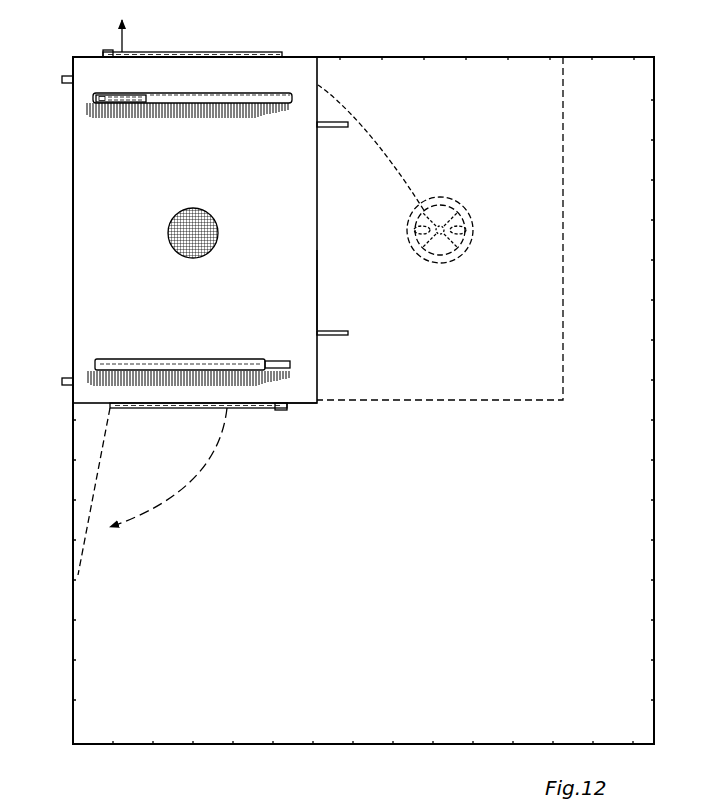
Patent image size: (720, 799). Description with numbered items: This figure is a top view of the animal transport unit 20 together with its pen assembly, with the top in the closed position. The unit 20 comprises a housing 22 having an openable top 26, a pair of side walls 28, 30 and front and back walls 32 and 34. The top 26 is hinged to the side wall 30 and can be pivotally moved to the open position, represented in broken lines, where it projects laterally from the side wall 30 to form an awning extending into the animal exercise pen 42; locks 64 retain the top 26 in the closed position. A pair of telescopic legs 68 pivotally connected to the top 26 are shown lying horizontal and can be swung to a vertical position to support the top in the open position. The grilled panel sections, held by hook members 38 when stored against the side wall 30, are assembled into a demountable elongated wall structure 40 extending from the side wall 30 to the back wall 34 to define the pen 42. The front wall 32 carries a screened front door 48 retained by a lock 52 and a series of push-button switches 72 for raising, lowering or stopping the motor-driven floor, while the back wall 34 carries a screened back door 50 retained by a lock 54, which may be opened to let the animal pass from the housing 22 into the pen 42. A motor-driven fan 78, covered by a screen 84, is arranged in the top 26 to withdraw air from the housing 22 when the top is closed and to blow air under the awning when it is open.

The animal transport unit 20 is at (535, 52).
The housing 22 is at (70, 169).
The openable top 26 is at (312, 97).
The side wall 28 is at (72, 270).
The side wall 30 is at (317, 290).
The front wall 32 is at (295, 56).
The back wall 34 is at (313, 405).
The hook members 38 is at (340, 128).
The demountable elongated wall structure 40 is at (651, 626).
The animal exercise pen 42 is at (97, 693).
The front screened door 48 is at (226, 52).
The back screened door 50 is at (155, 408).
The lock 52 is at (108, 50).
The lock 54 is at (283, 410).
The locks 64 is at (66, 77).
The telescopic legs 68 is at (165, 100).
The push-button switches 72 is at (74, 34).
The motor-driven fan 78 is at (460, 205).
The screen 84 is at (213, 220).